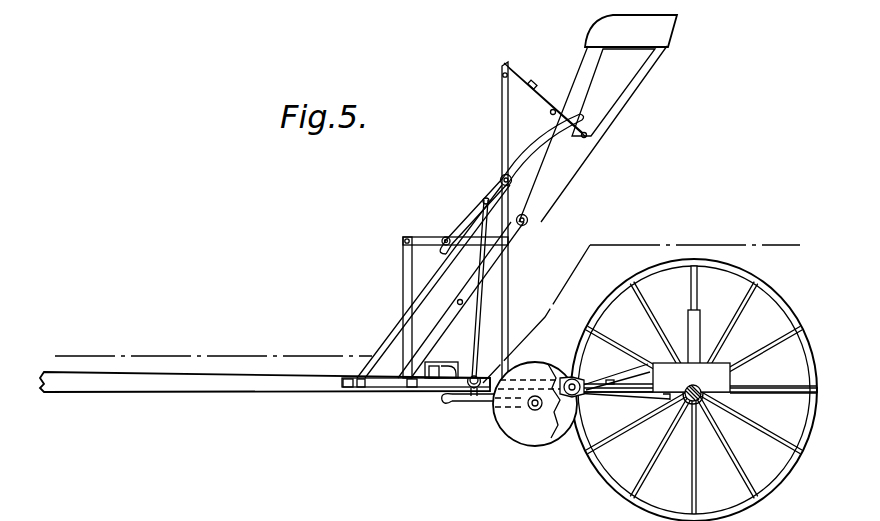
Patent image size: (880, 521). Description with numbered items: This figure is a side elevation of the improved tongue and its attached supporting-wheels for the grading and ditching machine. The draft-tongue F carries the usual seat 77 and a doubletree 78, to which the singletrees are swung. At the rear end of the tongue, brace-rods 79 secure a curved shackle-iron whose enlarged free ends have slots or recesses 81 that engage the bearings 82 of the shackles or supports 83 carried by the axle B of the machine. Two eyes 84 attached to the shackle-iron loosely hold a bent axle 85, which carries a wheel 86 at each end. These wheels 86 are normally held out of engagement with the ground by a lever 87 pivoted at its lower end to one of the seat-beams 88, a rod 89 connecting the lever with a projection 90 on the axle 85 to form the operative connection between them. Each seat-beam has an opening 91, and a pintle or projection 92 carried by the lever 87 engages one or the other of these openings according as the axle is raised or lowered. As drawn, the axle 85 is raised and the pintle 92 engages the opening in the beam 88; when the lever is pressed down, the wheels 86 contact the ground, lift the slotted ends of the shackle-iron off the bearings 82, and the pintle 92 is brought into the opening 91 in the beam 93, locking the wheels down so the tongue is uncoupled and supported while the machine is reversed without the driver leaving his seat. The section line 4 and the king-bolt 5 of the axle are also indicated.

The slot 4 is at (70, 328).
The king-bolt 5 is at (692, 318).
The seat 77 is at (631, 31).
The doubletree 78 is at (432, 374).
The brace-rods 79 is at (393, 388).
The slots or recesses 81 is at (580, 400).
The bearings 82 is at (572, 377).
The shackles or supports 83 is at (632, 394).
The eyes 84 is at (455, 398).
The bent axle 85 is at (486, 402).
The wheels 86 is at (527, 433).
The lever 87 is at (543, 147).
The seat-beam 88 is at (396, 324).
The rod 89 is at (483, 305).
The projection 90 is at (480, 378).
The opening 91 is at (528, 222).
The pintle or projection 92 is at (500, 178).
The seat-beam 93 is at (496, 262).
The axle B is at (691, 383).
The draft-tongue F is at (228, 388).